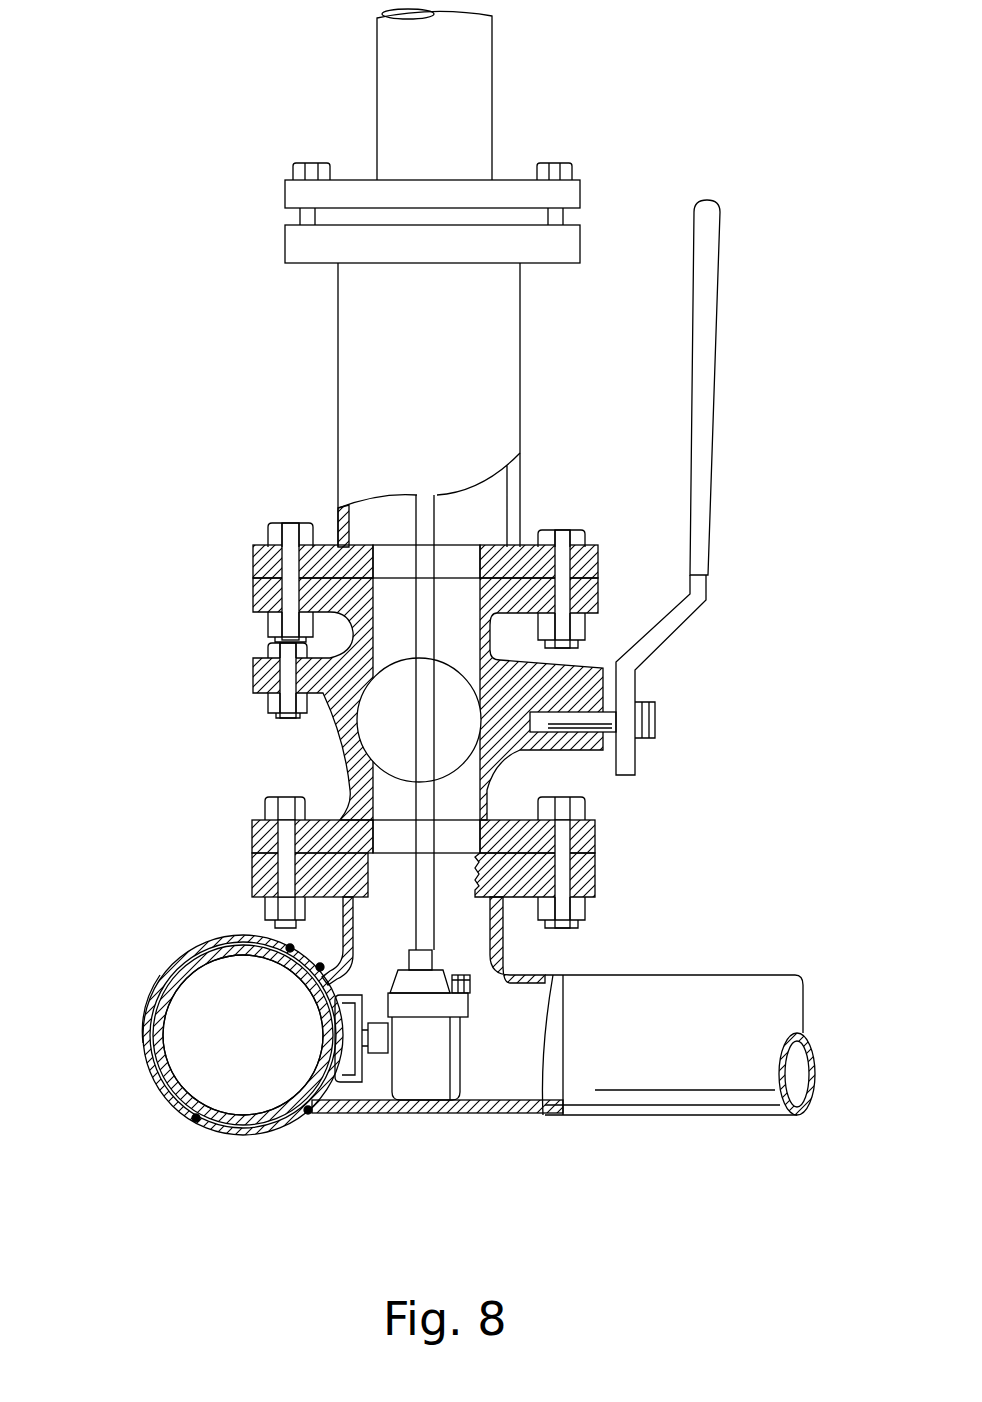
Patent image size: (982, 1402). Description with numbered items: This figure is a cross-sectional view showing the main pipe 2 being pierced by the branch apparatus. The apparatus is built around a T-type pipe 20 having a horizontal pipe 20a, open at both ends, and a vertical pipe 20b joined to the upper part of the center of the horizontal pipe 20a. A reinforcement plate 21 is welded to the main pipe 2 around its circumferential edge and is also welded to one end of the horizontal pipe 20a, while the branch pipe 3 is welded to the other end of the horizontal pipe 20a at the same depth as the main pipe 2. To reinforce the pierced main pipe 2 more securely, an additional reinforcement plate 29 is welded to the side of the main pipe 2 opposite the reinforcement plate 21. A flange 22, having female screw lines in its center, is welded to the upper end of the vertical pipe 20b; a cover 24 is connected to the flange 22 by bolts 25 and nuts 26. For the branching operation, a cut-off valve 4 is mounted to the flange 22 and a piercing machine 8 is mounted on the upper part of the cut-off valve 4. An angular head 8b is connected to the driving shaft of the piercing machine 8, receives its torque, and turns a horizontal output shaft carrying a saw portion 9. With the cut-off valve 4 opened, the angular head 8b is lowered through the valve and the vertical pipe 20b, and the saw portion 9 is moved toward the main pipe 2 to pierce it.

The main pipe 2 is at (203, 1120).
The branch pipe 3 is at (677, 1095).
The cut-off valve 4 is at (441, 575).
The piercing machine 8 is at (372, 392).
The angular head 8b is at (427, 1085).
The saw portion 9 is at (342, 1080).
The T-type pipe 20 is at (483, 1065).
The horizontal pipe 20a is at (465, 1113).
The vertical pipe 20b is at (500, 954).
The reinforcement plate 21 is at (278, 1128).
The flange 22 is at (598, 880).
The cover 24 is at (598, 846).
The bolts 25 is at (268, 800).
The nuts 26 is at (268, 912).
The additional reinforcement plate 29 is at (143, 1043).